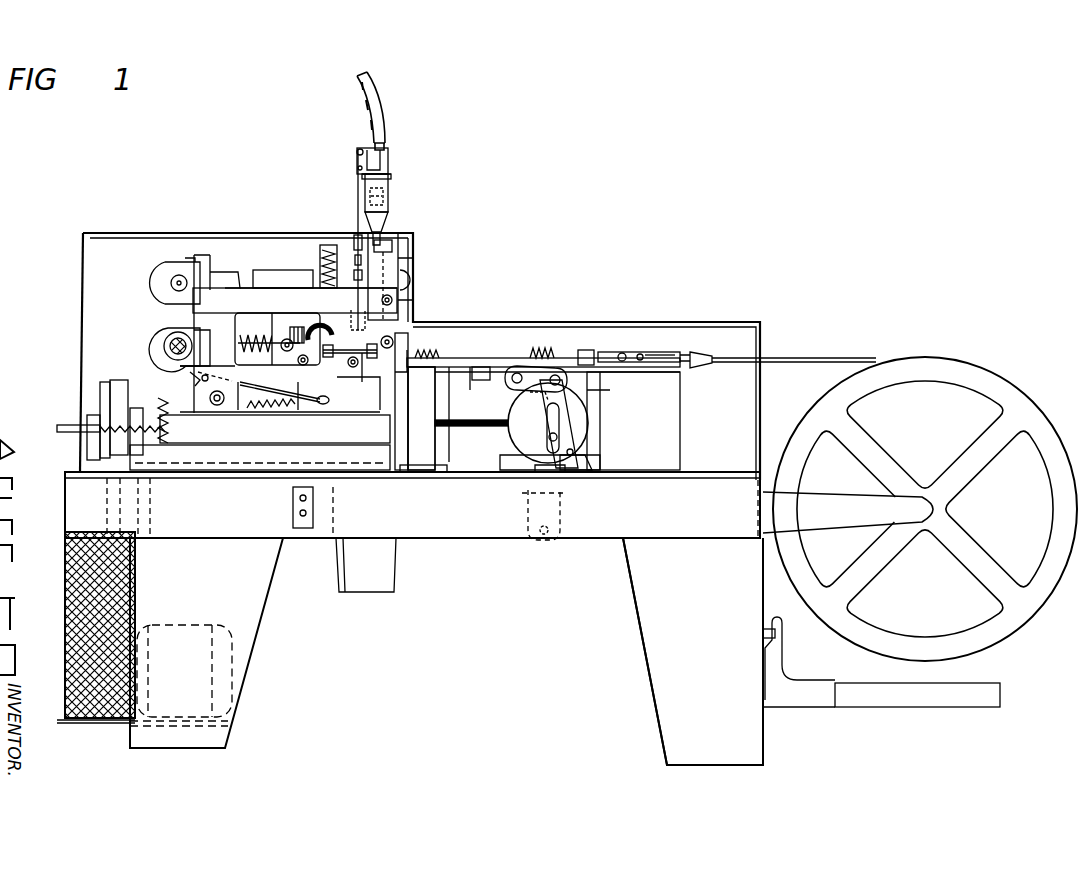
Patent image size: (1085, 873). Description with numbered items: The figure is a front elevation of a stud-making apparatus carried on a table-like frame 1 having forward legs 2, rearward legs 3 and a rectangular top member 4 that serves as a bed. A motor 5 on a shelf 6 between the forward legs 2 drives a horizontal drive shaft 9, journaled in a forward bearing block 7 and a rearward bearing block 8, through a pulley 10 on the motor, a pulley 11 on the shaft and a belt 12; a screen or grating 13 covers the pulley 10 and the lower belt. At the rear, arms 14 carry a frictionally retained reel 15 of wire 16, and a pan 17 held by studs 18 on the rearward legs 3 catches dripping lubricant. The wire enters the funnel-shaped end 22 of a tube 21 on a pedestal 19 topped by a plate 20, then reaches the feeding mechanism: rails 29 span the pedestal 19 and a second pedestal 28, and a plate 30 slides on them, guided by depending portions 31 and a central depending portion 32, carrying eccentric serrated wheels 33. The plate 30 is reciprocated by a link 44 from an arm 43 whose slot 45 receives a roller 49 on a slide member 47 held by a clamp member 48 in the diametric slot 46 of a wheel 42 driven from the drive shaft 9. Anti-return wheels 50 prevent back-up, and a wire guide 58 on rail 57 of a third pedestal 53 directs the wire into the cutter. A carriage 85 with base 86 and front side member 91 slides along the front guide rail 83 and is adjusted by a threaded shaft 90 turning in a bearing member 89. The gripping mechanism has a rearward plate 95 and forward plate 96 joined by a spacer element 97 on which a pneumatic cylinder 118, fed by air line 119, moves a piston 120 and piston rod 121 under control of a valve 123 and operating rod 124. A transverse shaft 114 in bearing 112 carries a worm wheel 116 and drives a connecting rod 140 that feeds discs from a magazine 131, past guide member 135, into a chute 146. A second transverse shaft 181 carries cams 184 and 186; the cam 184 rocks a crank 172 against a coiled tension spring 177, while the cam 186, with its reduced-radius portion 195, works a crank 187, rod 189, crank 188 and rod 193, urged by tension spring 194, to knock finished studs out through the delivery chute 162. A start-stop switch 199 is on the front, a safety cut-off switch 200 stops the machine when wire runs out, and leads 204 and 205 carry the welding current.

The frame 1 is at (606, 624).
The forward pair of legs 2 is at (248, 622).
The rearward pair of legs 3 is at (665, 710).
The top member 4 is at (655, 480).
The motor 5 is at (228, 680).
The shelf 6 is at (225, 730).
The forward bearing block 7 is at (137, 408).
The rearward bearing block 8 is at (505, 458).
The drive shaft 9 is at (460, 426).
The pulley 10 is at (78, 722).
The pulley 11 is at (102, 405).
The belt 12 is at (118, 380).
The screen or grating 13 is at (110, 723).
The arms 14 is at (828, 510).
The reel 15 is at (950, 370).
The wire 16 is at (845, 358).
The pan 17 is at (978, 708).
The studs 18 is at (782, 640).
The pedestal 19 is at (670, 410).
The plate 20 is at (668, 352).
The tube 21 is at (690, 352).
The funnel-shaped rearward end 22 is at (704, 368).
The second pedestal 28 is at (428, 455).
The rails 29 is at (449, 370).
The plate 30 is at (497, 358).
The forward and rearward depending portions 31 is at (548, 360).
The central depending portion 32 is at (508, 368).
The wheels 33 is at (541, 348).
The wheel 42 is at (520, 436).
The arm 43 is at (560, 403).
The link 44 is at (570, 380).
The longitudinal slot 45 is at (562, 420).
The diametric slot 46 is at (568, 472).
The slide member 47 is at (540, 395).
The clamp member 48 is at (590, 458).
The roller 49 is at (560, 437).
The wheels 50 is at (430, 350).
The third pedestal 53 is at (398, 455).
The rail 57 is at (412, 400).
The wire guide 58 is at (412, 350).
The front guide rail 83 is at (215, 462).
The carriage 85 is at (204, 270).
The base 86 is at (258, 445).
The bearing member 89 is at (87, 448).
The shaft 90 is at (70, 425).
The front side member 91 is at (300, 288).
The rearward plate 95 is at (390, 250).
The forward plate 96 is at (385, 280).
The spacer element 97 is at (385, 226).
The bearing 112 is at (179, 270).
The transverse shaft 114 is at (176, 278).
The worm wheel 116 is at (160, 285).
The double acting pneumatic cylinder 118 is at (368, 188).
The air line 119 is at (382, 96).
The piston 120 is at (388, 190).
The piston rod 121 is at (388, 202).
The valve 123 is at (357, 157).
The operating rod 124 is at (362, 176).
The magazine 131 is at (328, 248).
The guide member 135 is at (274, 270).
The connecting rod 140 is at (228, 275).
The chute 146 is at (358, 325).
The delivery chute 162 is at (375, 592).
The crank 172 is at (196, 372).
The coiled tension spring 177 is at (172, 410).
The transverse shaft 181 is at (170, 346).
The cam 184 is at (170, 330).
The cam 186 is at (166, 345).
The crank 187 is at (200, 372).
The crank 188 is at (325, 405).
The rod 189 is at (290, 390).
The rod 193 is at (368, 355).
The tension spring 194 is at (278, 410).
The portion of reduced radius 195 is at (205, 345).
The start-stop switch 199 is at (303, 530).
The safety cut-off switch 200 is at (588, 350).
The lead 204 is at (410, 265).
The lead 205 is at (258, 325).